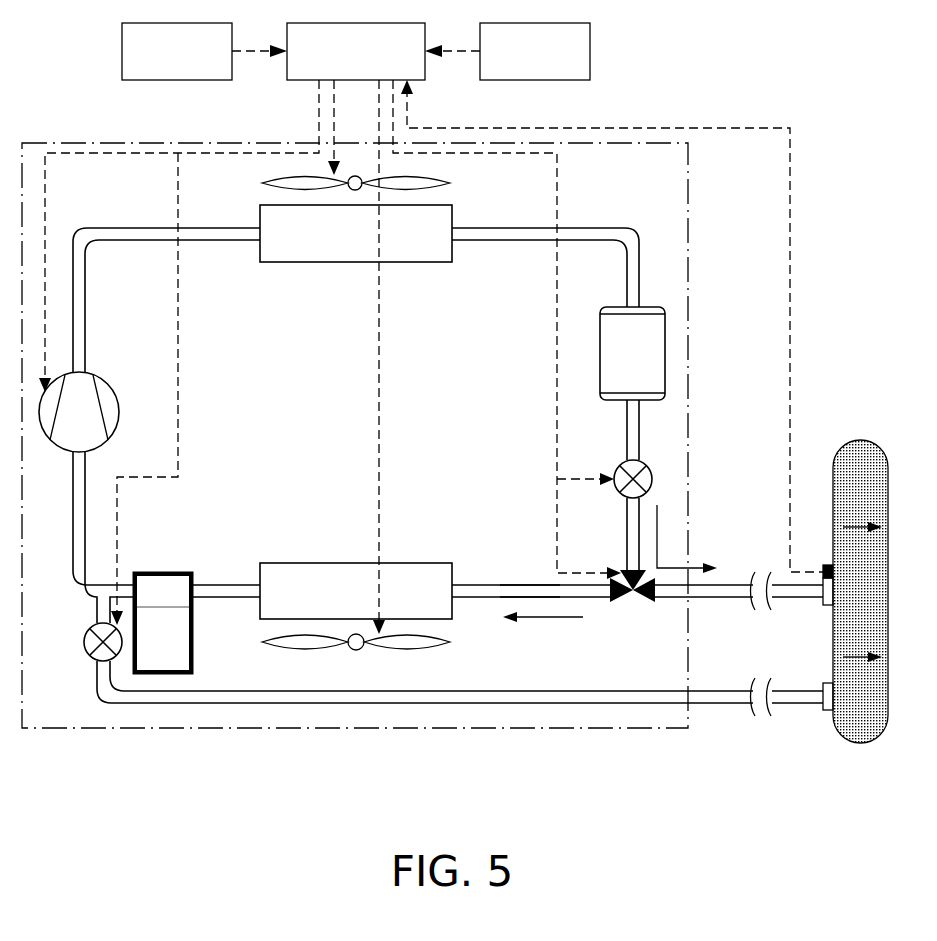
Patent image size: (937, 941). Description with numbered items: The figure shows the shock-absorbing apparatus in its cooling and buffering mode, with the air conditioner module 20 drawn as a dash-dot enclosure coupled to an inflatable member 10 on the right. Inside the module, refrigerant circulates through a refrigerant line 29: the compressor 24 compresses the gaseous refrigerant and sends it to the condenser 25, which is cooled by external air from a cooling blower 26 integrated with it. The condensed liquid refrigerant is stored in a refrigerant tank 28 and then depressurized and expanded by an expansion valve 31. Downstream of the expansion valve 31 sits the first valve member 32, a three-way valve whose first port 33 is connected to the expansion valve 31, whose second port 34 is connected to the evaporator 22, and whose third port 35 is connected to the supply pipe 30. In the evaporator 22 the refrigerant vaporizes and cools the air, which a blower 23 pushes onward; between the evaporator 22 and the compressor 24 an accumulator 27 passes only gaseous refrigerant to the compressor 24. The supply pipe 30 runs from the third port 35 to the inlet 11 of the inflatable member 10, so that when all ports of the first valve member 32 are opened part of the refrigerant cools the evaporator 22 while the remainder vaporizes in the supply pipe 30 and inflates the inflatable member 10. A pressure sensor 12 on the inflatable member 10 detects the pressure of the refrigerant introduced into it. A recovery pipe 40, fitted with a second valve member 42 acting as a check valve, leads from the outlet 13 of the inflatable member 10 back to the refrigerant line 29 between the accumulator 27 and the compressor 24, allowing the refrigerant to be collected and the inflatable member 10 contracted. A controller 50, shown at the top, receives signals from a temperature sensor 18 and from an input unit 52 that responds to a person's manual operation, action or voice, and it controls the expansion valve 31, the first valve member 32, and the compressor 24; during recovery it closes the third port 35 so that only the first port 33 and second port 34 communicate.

The inflatable member 10 is at (862, 441).
The inlet 11 is at (828, 606).
The pressure sensor 12 is at (823, 565).
The outlet 13 is at (828, 711).
The temperature sensor 18 is at (163, 65).
The air conditioner module 20 is at (628, 729).
The evaporator 22 is at (428, 563).
The blower 23 is at (455, 642).
The compressor 24 is at (110, 386).
The condenser 25 is at (428, 262).
The cooling blower 26 is at (455, 183).
The accumulator 27 is at (163, 572).
The refrigerant tank 28 is at (600, 346).
The refrigerant line 29 is at (530, 602).
The supply pipe 30 is at (728, 600).
The expansion valve 31 is at (615, 470).
The first valve member 32 is at (633, 612).
The first port 33 is at (625, 604).
The second port 34 is at (618, 604).
The third port 35 is at (647, 604).
The recovery pipe 40 is at (418, 704).
The second valve member 42 is at (86, 634).
The controller 50 is at (342, 65).
The input unit 52 is at (521, 65).